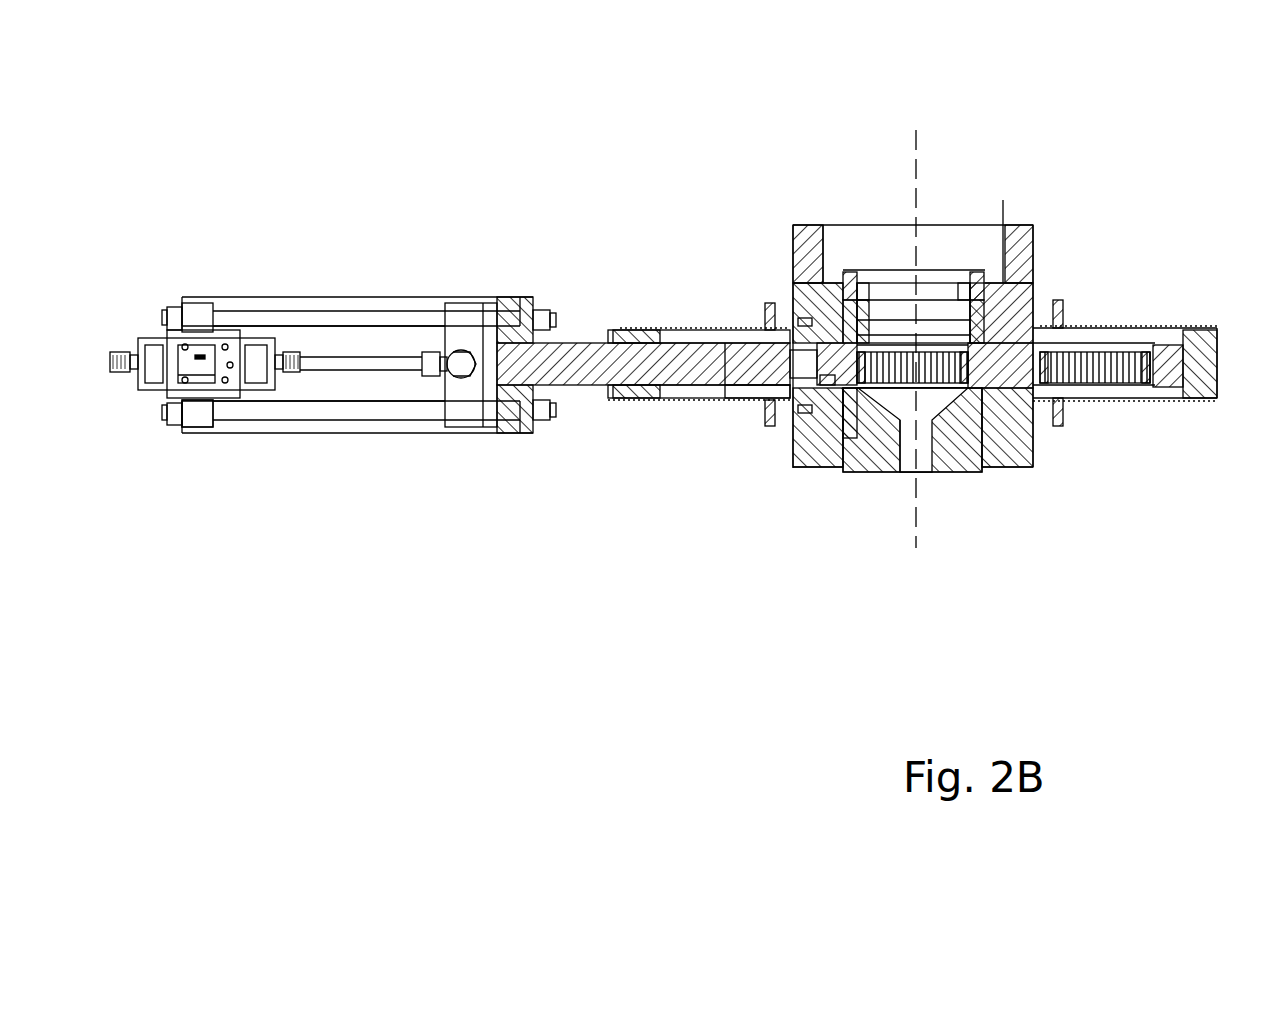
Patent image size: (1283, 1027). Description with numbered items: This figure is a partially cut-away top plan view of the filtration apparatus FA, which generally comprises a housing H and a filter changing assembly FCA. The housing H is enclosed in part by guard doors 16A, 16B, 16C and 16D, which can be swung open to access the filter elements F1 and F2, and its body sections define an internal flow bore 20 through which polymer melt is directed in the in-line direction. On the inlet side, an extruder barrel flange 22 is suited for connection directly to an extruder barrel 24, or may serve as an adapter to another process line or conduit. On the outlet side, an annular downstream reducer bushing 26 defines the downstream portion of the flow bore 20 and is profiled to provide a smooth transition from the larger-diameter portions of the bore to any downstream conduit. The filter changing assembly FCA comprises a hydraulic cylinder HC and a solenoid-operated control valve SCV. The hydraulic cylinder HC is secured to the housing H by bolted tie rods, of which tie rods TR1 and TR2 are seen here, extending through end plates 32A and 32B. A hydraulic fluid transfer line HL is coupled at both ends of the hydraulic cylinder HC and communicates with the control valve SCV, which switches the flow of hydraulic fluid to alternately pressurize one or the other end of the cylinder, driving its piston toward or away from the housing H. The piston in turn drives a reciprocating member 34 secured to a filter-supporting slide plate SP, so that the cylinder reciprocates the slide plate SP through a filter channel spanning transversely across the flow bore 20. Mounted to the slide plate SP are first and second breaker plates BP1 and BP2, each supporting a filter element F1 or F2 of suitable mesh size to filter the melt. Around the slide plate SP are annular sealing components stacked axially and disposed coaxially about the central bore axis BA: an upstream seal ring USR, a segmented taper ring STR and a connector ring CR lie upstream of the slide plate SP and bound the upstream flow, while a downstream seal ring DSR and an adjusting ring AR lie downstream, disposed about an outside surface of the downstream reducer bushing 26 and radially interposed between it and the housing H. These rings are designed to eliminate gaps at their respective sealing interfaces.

The filter changing assembly FCA is at (204, 200).
The solenoid-operated control valve SCV is at (148, 337).
The tie rod TR1 is at (262, 314).
The tie rod TR2 is at (272, 421).
The hydraulic cylinder HC is at (362, 341).
The hydraulic fluid transfer line HL is at (352, 421).
The end plate 32A is at (460, 427).
The end plate 32B is at (196, 421).
The reciprocating member 34 is at (583, 340).
The guard door 16C is at (703, 332).
The guard door 16A is at (690, 401).
The slide plate SP is at (737, 388).
The upstream seal ring USR is at (793, 297).
The extruder barrel 24 is at (823, 225).
The segmented taper ring STR is at (870, 298).
The internal flow bore 20 is at (936, 275).
The housing H is at (1016, 158).
The connector ring CR is at (978, 297).
The extruder barrel flange 22 is at (1035, 230).
The filtration apparatus FA is at (1165, 120).
The guard door 16D is at (1120, 330).
The guard door 16B is at (1100, 400).
The adjusting ring AR is at (843, 427).
The downstream reducer bushing 26 is at (880, 472).
The first filter element F1 is at (897, 472).
The central bore axis BA is at (918, 543).
The first breaker plate BP1 is at (958, 470).
The downstream seal ring DSR is at (1020, 468).
The second breaker plate BP2 is at (1110, 395).
The second filter element F2 is at (1150, 395).